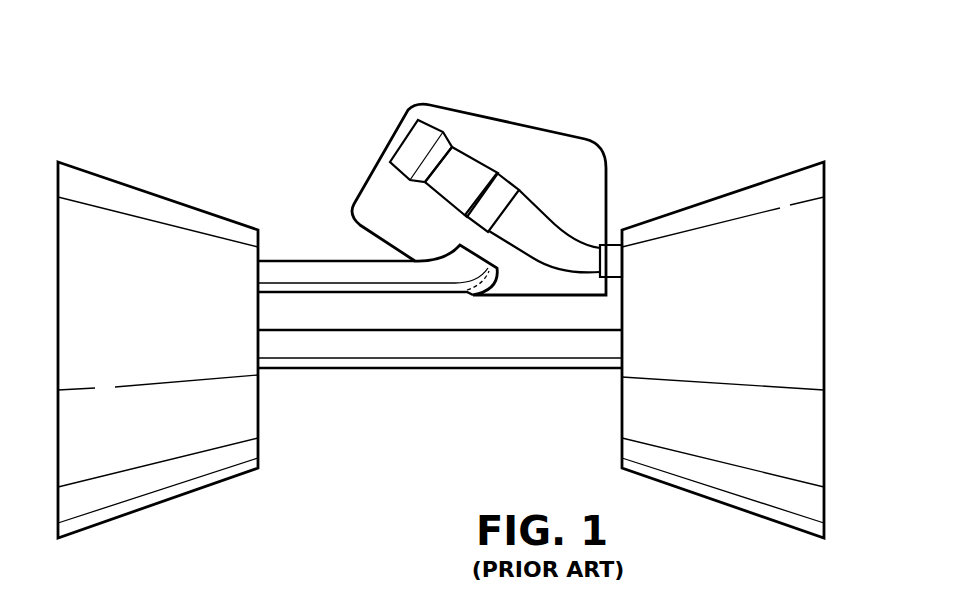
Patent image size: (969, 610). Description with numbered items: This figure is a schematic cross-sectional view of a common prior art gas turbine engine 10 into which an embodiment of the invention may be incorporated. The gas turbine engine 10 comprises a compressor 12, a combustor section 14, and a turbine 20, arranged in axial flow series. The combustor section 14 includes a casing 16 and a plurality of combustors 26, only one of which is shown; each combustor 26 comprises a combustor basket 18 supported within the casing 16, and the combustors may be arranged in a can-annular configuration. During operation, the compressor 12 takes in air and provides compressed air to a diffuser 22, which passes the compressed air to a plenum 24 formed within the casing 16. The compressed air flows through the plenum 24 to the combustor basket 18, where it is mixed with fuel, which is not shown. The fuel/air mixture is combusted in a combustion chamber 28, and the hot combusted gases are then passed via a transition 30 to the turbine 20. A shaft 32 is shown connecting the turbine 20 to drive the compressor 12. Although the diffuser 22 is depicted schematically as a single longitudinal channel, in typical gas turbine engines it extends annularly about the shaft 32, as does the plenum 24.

The gas turbine engine 10 is at (200, 143).
The compressor 12 is at (158, 350).
The combustor section 14 is at (352, 184).
The casing 16 is at (530, 122).
The combustor basket 18 is at (417, 142).
The turbine 20 is at (723, 350).
The diffuser 22 is at (327, 262).
The plenum 24 is at (583, 152).
The combustor 26 is at (468, 146).
The combustion chamber 28 is at (467, 168).
The transition 30 is at (552, 226).
The shaft 32 is at (350, 368).